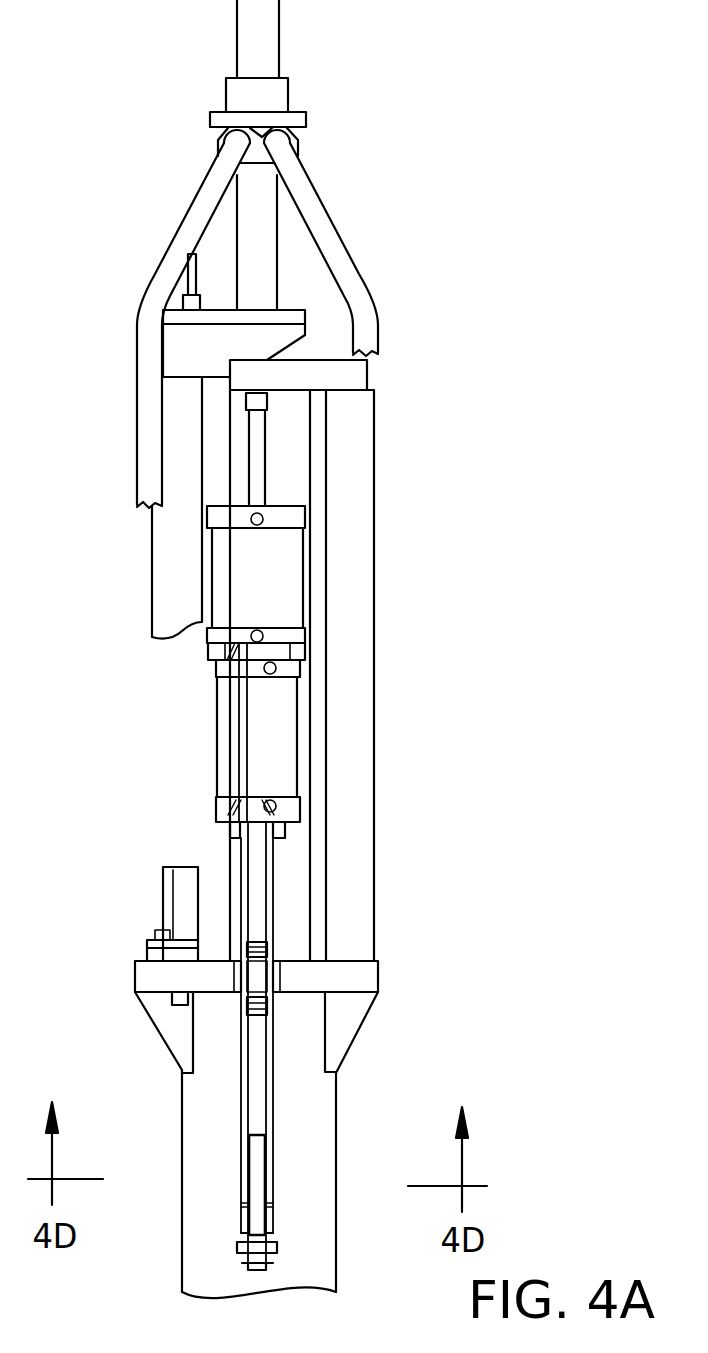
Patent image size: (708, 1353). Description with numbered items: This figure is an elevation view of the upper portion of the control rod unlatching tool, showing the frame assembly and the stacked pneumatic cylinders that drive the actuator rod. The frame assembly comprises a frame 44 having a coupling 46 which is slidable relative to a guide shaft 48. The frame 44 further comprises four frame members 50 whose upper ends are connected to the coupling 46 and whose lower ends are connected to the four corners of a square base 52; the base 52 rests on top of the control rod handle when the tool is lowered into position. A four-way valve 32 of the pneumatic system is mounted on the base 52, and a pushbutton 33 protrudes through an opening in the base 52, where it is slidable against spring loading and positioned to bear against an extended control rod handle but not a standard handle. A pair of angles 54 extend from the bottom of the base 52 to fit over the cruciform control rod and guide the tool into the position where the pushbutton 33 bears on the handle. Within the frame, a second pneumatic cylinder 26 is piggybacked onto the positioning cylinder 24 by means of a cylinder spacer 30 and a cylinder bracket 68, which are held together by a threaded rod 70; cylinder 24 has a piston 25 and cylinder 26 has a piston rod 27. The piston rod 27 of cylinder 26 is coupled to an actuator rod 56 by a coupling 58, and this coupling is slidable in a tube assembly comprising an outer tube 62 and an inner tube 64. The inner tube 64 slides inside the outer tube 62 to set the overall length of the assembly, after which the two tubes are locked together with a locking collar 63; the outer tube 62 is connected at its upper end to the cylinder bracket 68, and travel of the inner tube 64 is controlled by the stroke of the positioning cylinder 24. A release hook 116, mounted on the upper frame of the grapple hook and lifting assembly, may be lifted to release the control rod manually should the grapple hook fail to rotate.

The positioning cylinder 24 is at (210, 563).
The piston 25 is at (260, 427).
The second pneumatic cylinder 26 is at (216, 728).
The piston rod 27 is at (253, 863).
The cylinder spacer 30 is at (210, 650).
The four-way valve 32 is at (160, 895).
The pushbutton 33 is at (172, 998).
The frame 44 is at (327, 200).
The coupling 46 is at (300, 142).
The guide shaft 48 is at (270, 262).
The frame members 50 is at (157, 257).
The square base 52 is at (380, 975).
The angles 54 is at (342, 1088).
The actuator rod 56 is at (257, 1158).
The coupling 58 is at (240, 998).
The outer tube 62 is at (240, 1107).
The locking collar 63 is at (277, 1245).
The inner tube 64 is at (242, 1207).
The cylinder bracket 68 is at (217, 815).
The threaded rod 70 is at (238, 700).
The release hook 116 is at (187, 280).